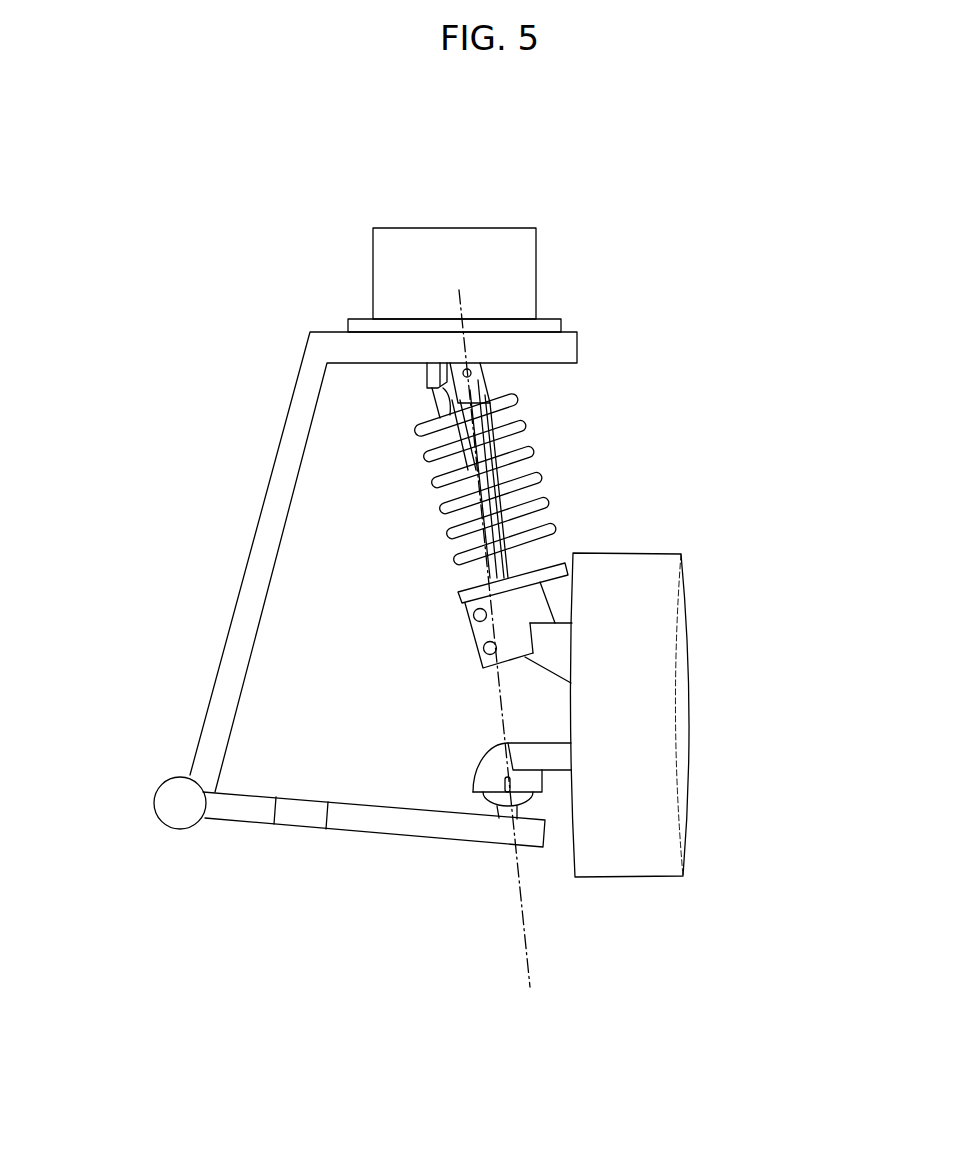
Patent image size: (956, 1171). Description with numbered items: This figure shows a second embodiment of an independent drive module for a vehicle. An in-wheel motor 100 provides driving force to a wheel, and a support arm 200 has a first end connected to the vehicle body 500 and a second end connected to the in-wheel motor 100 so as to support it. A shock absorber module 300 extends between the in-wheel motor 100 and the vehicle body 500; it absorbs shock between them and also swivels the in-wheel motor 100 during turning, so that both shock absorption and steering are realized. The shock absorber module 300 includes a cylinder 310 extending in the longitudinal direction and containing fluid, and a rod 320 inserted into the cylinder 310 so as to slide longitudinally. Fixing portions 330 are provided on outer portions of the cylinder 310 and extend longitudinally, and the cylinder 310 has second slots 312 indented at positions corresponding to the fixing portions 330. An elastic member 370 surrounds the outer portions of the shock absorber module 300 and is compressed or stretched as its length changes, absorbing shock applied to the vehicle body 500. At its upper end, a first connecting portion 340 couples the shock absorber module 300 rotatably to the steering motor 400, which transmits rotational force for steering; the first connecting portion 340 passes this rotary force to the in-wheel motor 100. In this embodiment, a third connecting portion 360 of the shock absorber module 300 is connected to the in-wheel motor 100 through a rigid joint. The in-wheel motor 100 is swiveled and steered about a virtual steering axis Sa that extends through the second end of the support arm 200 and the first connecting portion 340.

The in-wheel motor 100 is at (645, 706).
The support arm 200 is at (411, 828).
The shock absorber module 300 is at (385, 514).
The cylinder 310 is at (520, 555).
The second slots 312 is at (462, 592).
The rod 320 is at (510, 470).
The fixing portions 330 is at (453, 492).
The first connecting portion 340 is at (473, 400).
The third connecting portion 360 is at (525, 605).
The elastic member 370 is at (526, 451).
The steering motor 400 is at (449, 246).
The vehicle body 500 is at (277, 483).
The virtual steering axis Sa is at (523, 943).